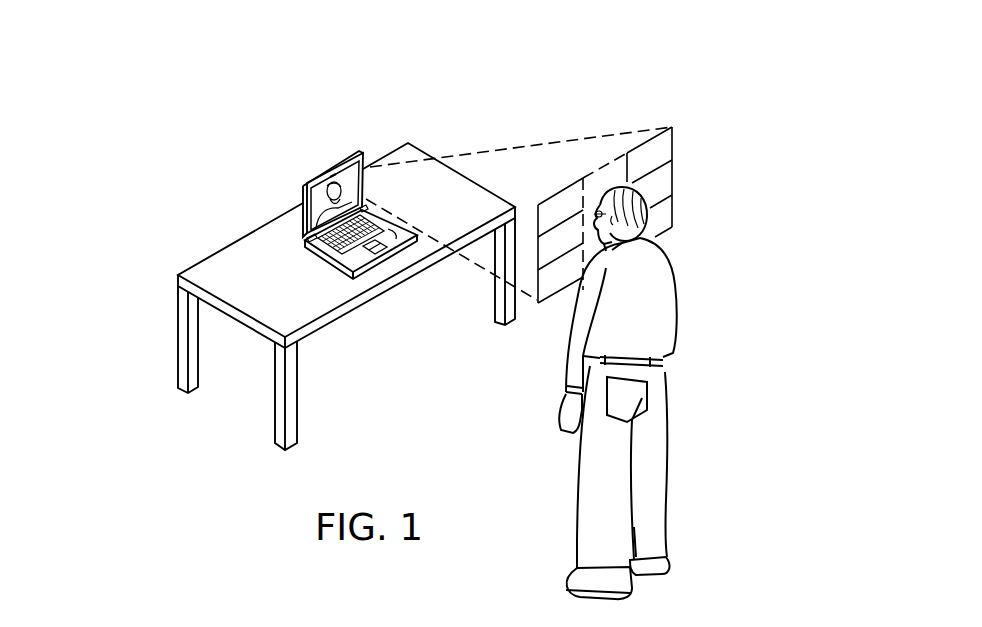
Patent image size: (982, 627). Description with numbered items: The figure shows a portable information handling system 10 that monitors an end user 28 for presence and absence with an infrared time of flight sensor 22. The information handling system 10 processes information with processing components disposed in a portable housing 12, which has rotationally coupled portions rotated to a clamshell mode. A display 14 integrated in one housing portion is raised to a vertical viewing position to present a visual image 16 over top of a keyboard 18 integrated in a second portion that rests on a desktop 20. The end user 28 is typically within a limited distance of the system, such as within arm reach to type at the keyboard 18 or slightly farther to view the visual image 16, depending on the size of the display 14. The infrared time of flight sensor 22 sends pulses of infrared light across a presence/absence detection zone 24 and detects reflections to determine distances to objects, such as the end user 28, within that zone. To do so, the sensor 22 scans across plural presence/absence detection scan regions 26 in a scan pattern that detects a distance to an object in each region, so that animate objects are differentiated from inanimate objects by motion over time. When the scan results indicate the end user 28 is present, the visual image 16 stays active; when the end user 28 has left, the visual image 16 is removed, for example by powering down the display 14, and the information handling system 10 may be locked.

The portable information handling system 10 is at (270, 227).
The portable housing 12 is at (341, 272).
The display 14 is at (370, 180).
The visual image 16 is at (308, 195).
The keyboard 18 is at (345, 253).
The desktop 20 is at (197, 274).
The infrared time of flight sensor 22 is at (350, 94).
The presence/absence detection zone 24 is at (612, 218).
The presence/absence detection scan regions 26 is at (743, 248).
The end user 28 is at (658, 444).